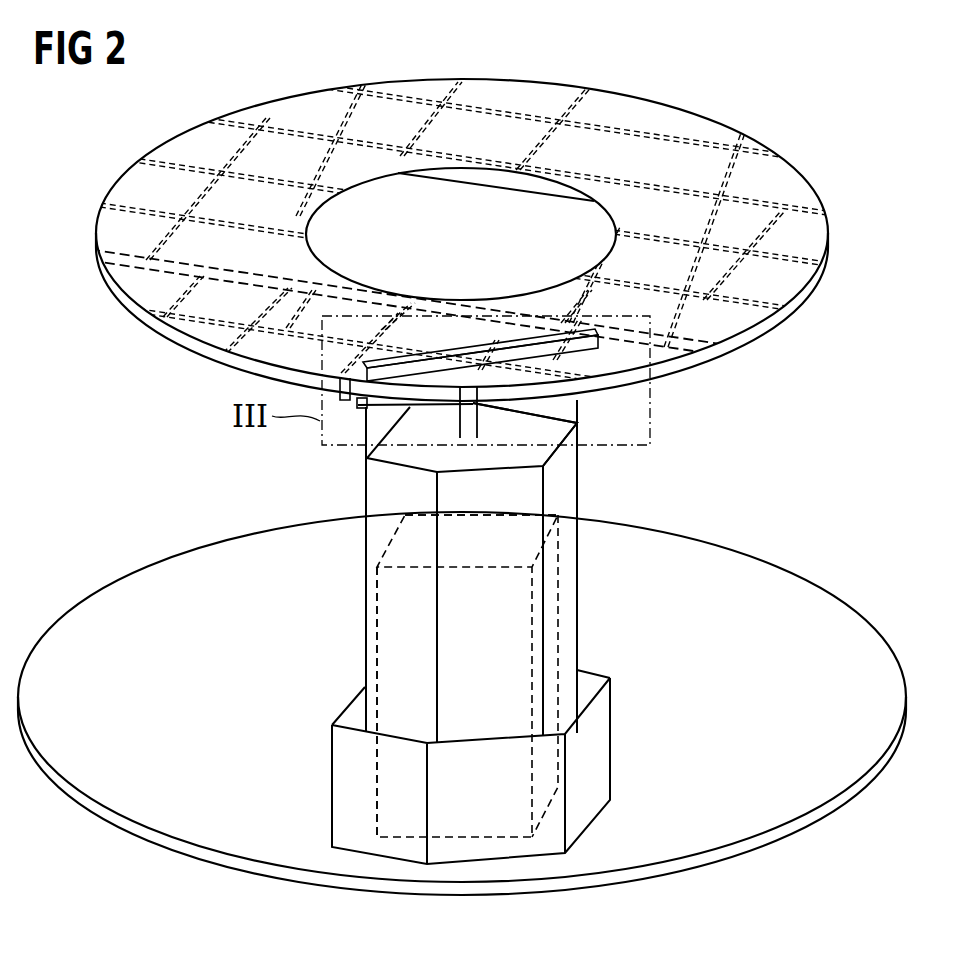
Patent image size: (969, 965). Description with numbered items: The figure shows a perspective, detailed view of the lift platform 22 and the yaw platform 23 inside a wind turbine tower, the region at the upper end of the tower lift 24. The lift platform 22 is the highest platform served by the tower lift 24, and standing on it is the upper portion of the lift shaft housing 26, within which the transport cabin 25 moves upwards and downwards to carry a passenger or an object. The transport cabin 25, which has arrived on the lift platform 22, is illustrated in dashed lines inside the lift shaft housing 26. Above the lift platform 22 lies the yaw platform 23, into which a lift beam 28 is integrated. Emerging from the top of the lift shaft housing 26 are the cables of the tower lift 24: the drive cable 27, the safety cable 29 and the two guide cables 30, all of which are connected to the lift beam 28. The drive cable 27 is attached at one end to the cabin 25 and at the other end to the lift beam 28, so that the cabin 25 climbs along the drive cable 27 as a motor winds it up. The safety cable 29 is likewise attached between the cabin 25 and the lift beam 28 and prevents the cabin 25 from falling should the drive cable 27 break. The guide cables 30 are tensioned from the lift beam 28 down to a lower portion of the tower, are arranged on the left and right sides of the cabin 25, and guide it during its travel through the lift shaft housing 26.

The lift platform 22 is at (852, 625).
The yaw platform 23 is at (806, 200).
The tower lift 24 is at (362, 632).
The transport cabin 25 is at (577, 631).
The lift shaft housing 26 is at (467, 676).
The drive cable 27 is at (484, 425).
The lift beam 28 is at (627, 353).
The safety cable 29 is at (452, 425).
The guide cables 30 is at (368, 430).